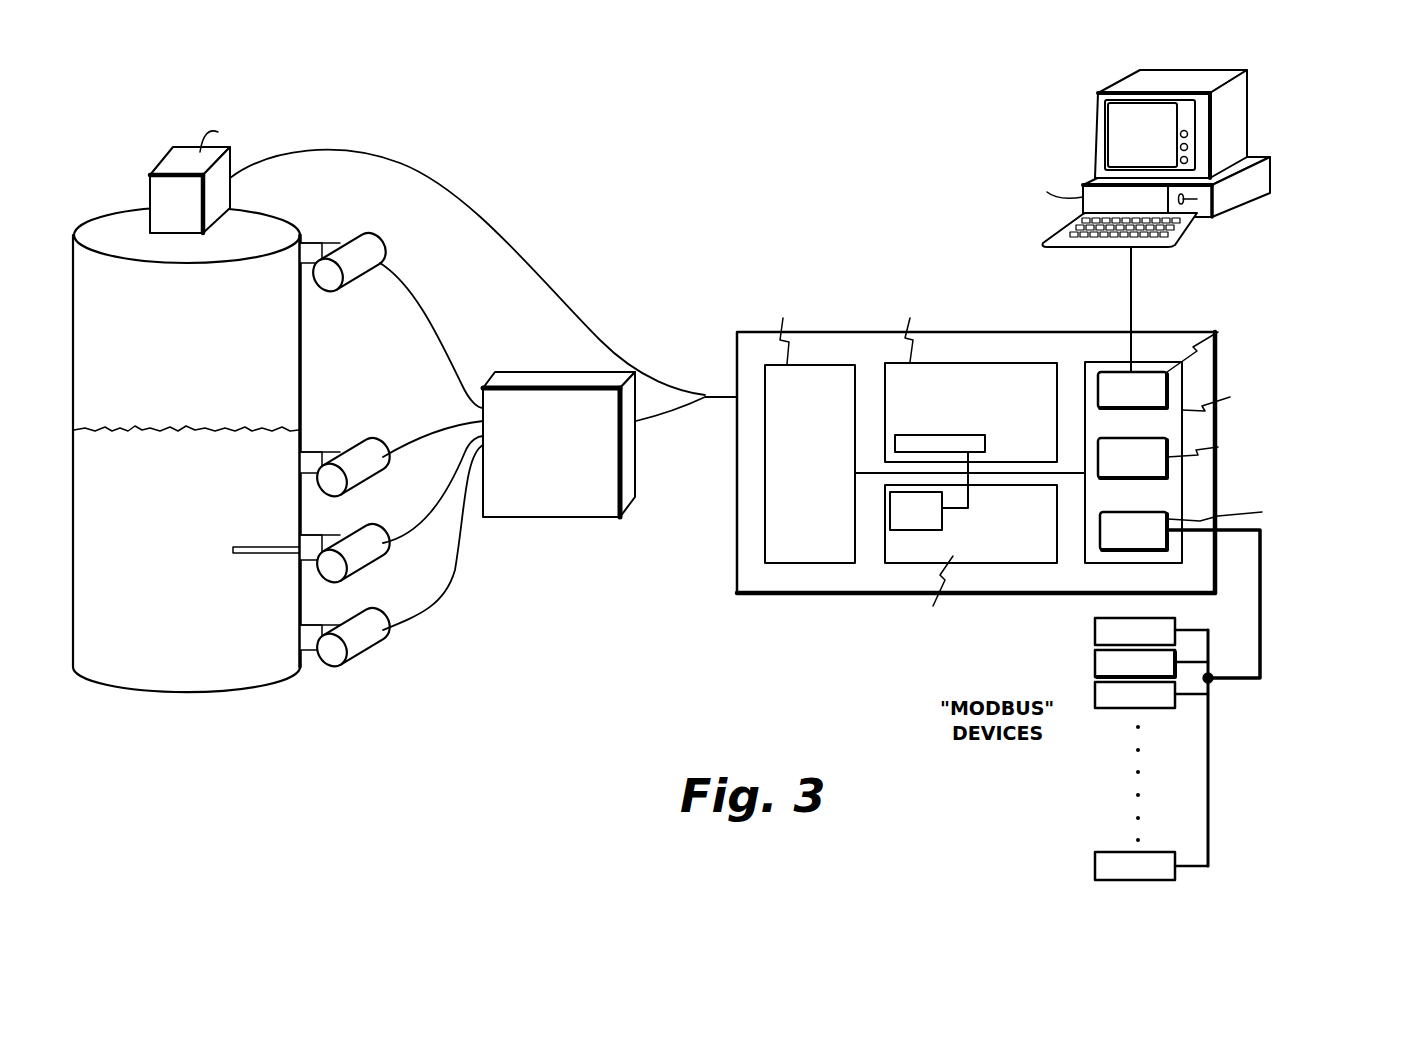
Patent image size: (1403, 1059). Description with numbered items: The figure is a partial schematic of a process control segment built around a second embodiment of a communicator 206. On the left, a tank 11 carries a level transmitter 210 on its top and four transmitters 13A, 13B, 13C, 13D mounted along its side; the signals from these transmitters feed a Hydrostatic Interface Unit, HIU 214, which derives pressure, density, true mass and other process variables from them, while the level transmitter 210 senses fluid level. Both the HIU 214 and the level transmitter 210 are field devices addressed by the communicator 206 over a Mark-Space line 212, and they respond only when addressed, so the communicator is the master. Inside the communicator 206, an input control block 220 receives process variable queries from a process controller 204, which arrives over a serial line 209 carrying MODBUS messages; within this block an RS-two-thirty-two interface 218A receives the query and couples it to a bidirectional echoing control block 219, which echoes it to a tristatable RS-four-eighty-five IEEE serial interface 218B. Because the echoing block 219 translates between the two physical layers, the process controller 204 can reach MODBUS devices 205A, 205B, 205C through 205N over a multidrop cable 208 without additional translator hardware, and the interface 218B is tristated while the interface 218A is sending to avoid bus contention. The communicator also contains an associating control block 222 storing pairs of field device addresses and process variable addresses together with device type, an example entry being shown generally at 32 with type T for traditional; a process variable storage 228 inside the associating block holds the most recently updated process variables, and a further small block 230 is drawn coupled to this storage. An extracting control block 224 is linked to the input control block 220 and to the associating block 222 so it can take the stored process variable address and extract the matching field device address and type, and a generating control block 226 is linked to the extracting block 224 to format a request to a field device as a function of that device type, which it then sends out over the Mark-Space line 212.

The tank 11 is at (182, 611).
The transmitter 13A is at (363, 257).
The transmitter 13B is at (360, 450).
The transmitter 13C is at (368, 554).
The transmitter 13D is at (363, 644).
The level transmitter 210 is at (157, 197).
The Hydrostatic Interface Unit (HIU) 214 is at (558, 463).
The Mark-Space line 212 is at (717, 401).
The communicator 206 is at (1072, 586).
The generating control block 226 is at (816, 501).
The associating control block 222 is at (1036, 460).
The process variable storage 228 is at (951, 454).
The register 230 is at (933, 524).
The extracting control block 224 is at (1001, 545).
The FD address, PV address and device type entry 32 is at (977, 370).
The input control block 220 is at (1146, 435).
The RS-232 interface 218A is at (1160, 404).
The bidirectional echoing control block 219 is at (1150, 474).
The tristatable RS-485 IEEE serial interface 218B is at (1162, 546).
The RS-232 line 209 is at (1133, 270).
The process controller 204 is at (1249, 102).
The RS-485 cable 208 is at (1212, 790).
The MODBUS device 205A is at (1055, 695).
The MODBUS device 205B is at (1058, 706).
The MODBUS device 205C is at (1060, 718).
The MODBUS device 205N is at (1043, 748).